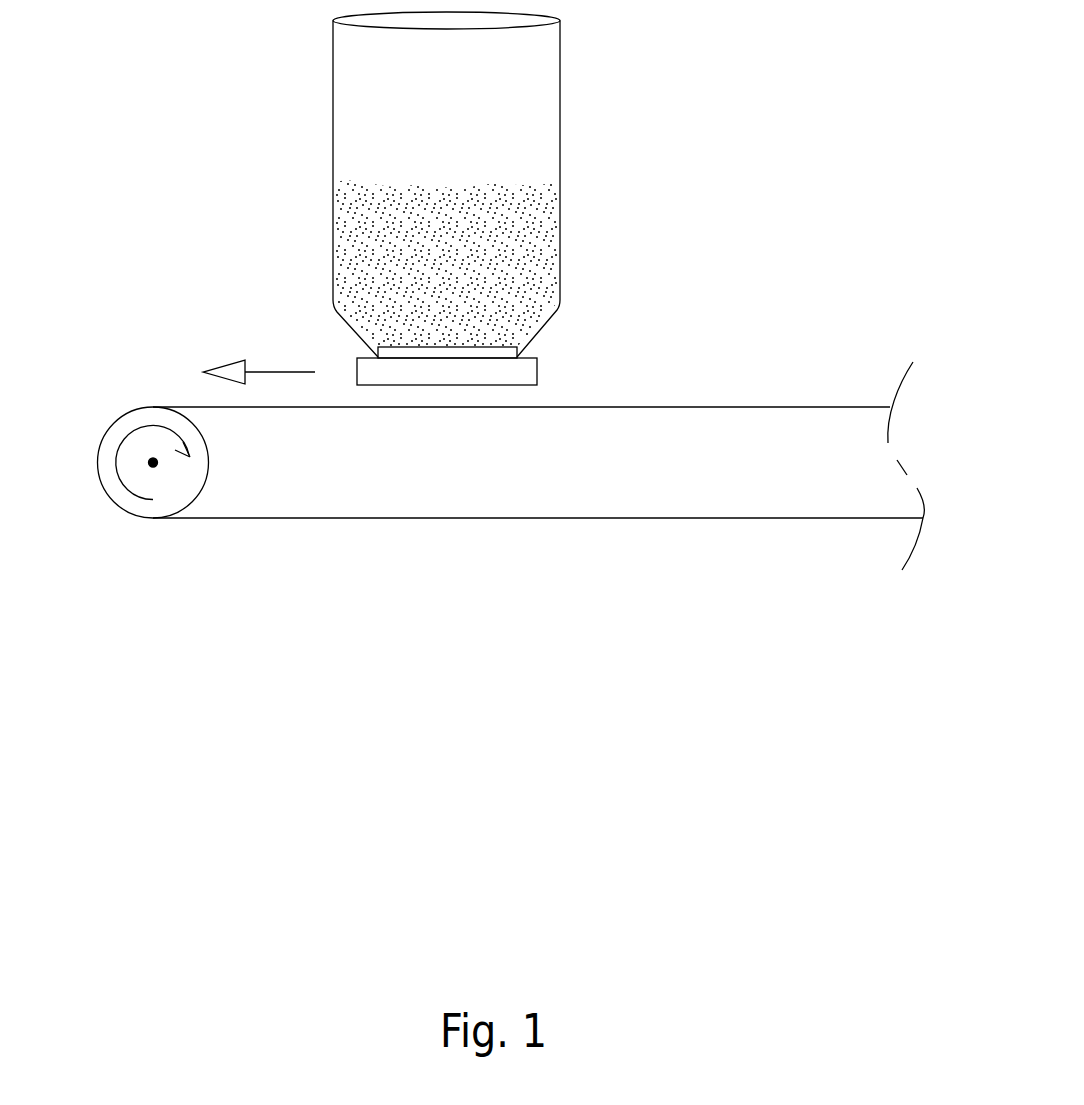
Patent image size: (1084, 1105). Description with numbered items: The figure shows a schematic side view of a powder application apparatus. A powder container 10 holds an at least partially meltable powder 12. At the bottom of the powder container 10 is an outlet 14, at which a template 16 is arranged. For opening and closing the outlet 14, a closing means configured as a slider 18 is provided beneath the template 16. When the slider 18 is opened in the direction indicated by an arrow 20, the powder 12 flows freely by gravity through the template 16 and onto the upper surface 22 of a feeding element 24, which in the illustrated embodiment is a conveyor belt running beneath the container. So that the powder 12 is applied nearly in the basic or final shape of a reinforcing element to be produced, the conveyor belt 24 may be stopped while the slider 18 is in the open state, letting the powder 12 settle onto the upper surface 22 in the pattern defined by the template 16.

The powder container 10 is at (529, 73).
The at least partially meltable powder 12 is at (529, 230).
The outlet 14 is at (500, 328).
The template 16 is at (490, 353).
The slider 18 is at (495, 373).
The arrow 20 is at (280, 370).
The upper surface 22 is at (767, 407).
The feeding element 24 is at (141, 390).